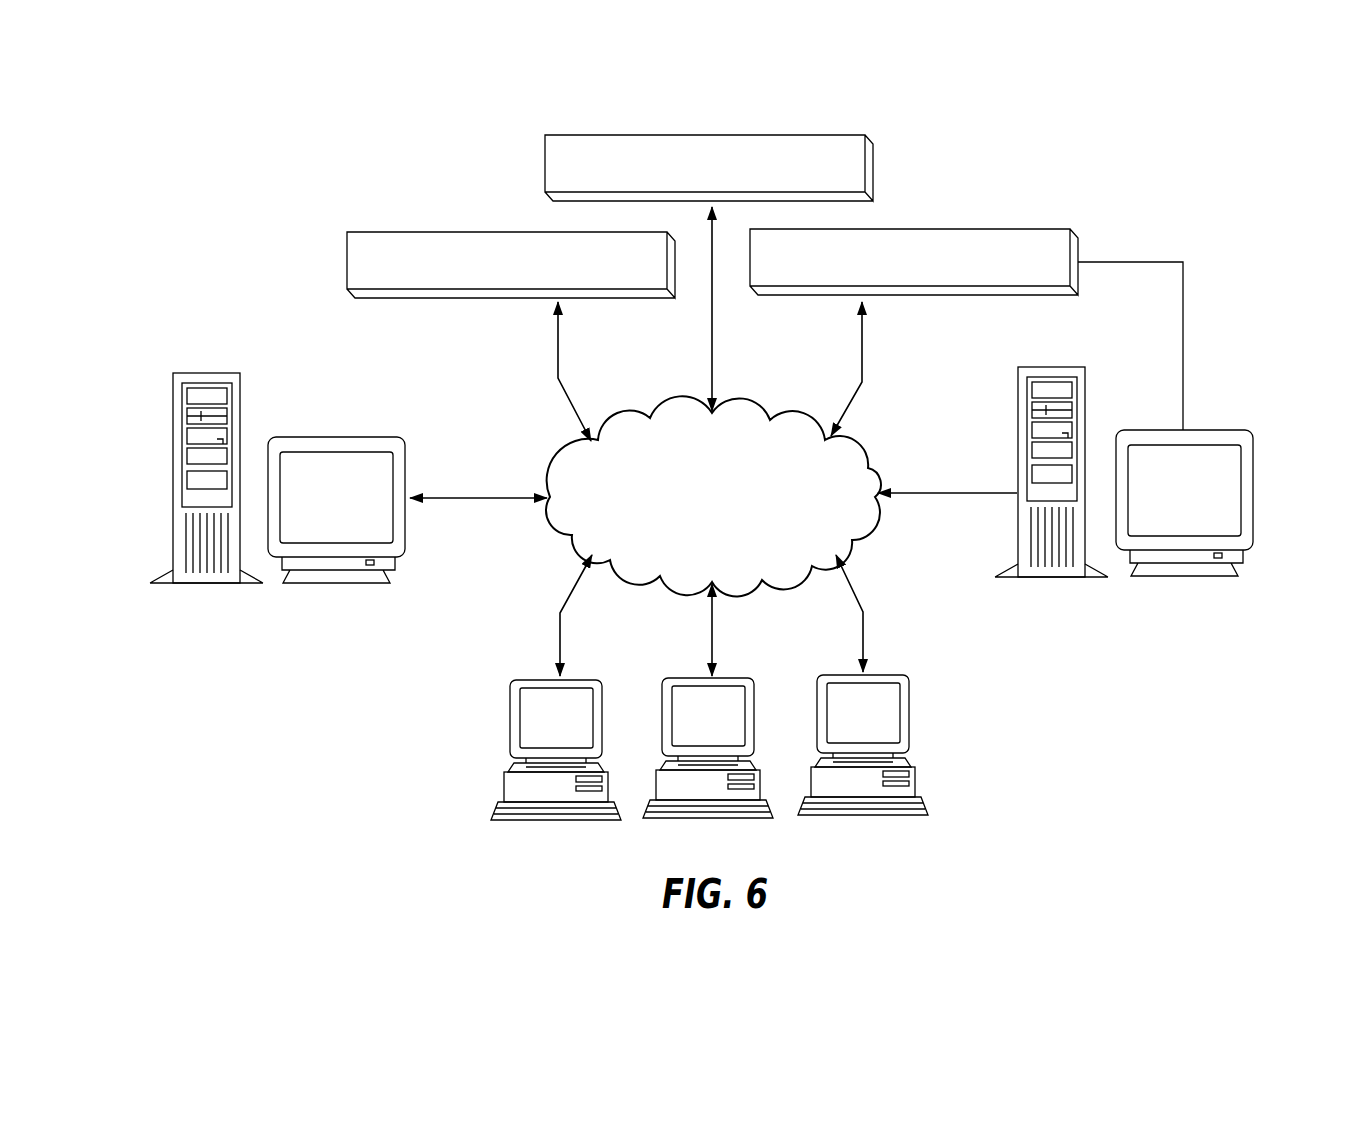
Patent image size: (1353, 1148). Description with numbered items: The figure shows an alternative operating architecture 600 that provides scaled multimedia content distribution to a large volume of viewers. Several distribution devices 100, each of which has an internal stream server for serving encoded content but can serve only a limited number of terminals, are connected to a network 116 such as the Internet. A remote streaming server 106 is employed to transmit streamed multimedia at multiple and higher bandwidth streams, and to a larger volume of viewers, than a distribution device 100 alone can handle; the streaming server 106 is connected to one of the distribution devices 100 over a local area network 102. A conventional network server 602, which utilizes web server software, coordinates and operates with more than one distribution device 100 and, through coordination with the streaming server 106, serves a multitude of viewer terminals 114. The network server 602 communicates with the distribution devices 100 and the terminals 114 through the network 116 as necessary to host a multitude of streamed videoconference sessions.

The alternative operating architecture 600 is at (1042, 128).
The distribution device 100 is at (822, 135).
The local area network 102 is at (1145, 262).
The streaming server 106 is at (1208, 428).
The remote terminals 114 is at (535, 678).
The network 116 is at (565, 470).
The network server 602 is at (205, 372).